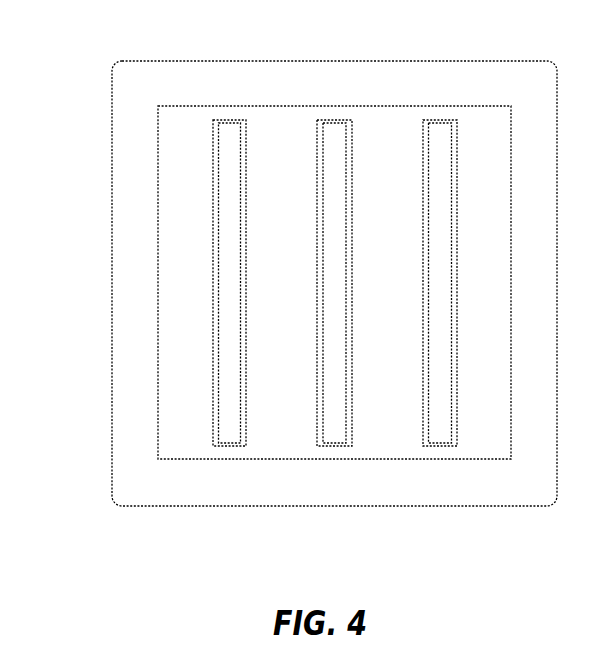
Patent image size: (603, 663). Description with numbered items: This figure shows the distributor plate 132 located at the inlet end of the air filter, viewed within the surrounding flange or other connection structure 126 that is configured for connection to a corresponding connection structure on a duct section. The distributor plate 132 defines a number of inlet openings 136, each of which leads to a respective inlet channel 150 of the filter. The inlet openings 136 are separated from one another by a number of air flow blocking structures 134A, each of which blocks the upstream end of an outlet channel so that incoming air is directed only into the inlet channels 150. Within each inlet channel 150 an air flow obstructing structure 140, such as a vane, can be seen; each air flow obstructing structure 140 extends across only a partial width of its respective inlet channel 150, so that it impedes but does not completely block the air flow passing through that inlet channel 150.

The flange or other connection structure 126 is at (125, 84).
The distributor plate 132 is at (185, 263).
The air flow blocking structures 134A is at (477, 397).
The inlet openings 136 is at (422, 306).
The air flow obstructing structure 140 is at (247, 230).
The inlet channel 150 is at (322, 239).